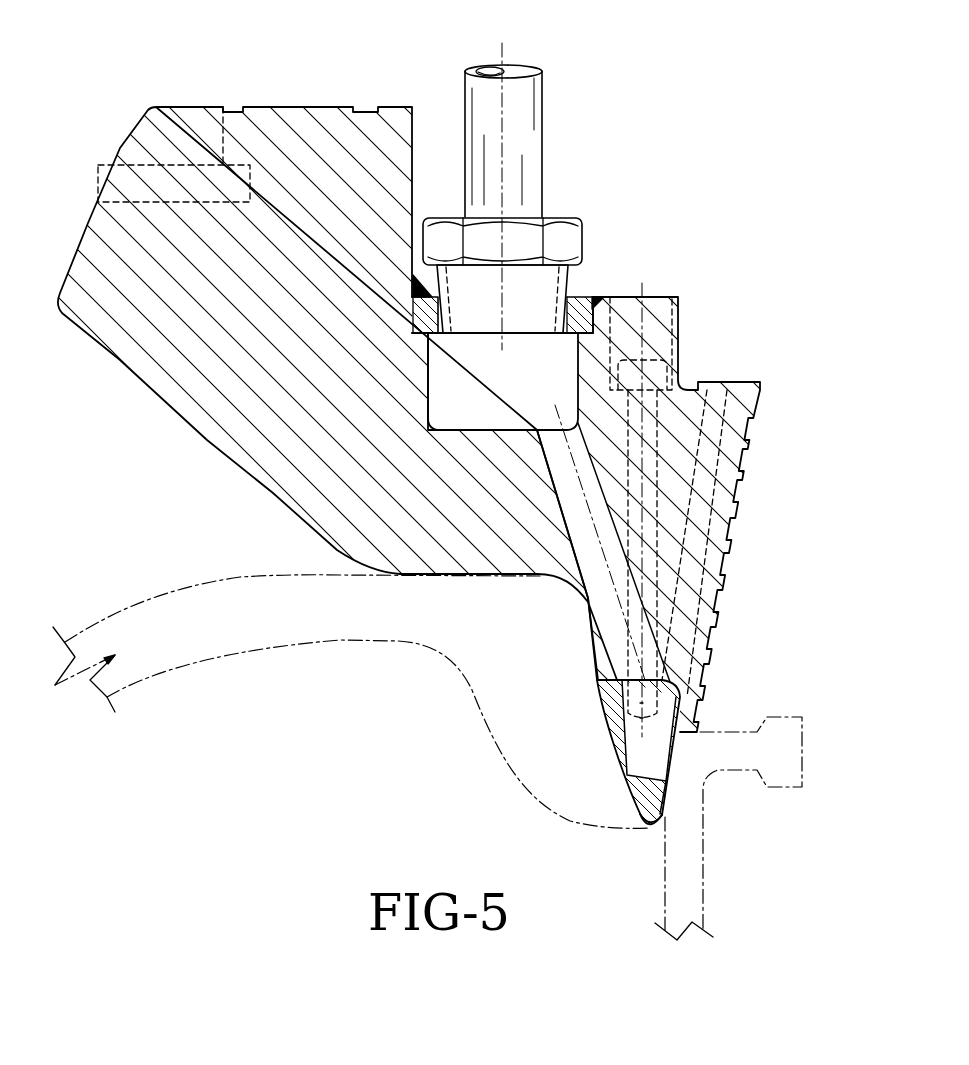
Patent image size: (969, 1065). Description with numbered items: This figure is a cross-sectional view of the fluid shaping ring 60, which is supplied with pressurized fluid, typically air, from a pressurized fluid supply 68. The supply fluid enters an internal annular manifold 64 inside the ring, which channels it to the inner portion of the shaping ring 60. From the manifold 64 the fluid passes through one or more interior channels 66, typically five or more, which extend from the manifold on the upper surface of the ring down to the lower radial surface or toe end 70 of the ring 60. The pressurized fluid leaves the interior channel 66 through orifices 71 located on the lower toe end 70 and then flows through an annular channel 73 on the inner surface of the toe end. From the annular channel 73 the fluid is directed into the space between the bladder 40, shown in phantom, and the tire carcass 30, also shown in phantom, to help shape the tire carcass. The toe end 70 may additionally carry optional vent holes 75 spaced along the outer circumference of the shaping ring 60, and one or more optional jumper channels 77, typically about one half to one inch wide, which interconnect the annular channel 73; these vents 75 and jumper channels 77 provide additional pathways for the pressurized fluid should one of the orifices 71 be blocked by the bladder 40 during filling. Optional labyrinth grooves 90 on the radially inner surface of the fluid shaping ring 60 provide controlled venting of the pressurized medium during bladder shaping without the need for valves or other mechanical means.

The tire carcass 30 is at (128, 611).
The bladder 40 is at (703, 878).
The fluid shaping ring 60 is at (146, 106).
The internal annular manifold 64 is at (472, 400).
The interior channel 66 is at (598, 626).
The pressurized fluid supply 68 is at (542, 128).
The toe end 70 is at (612, 729).
The orifice 71 is at (645, 753).
The annular channel 73 is at (673, 755).
The vent hole 75 is at (660, 702).
The jumper channel 77 is at (668, 818).
The labyrinth groove 90 is at (737, 503).